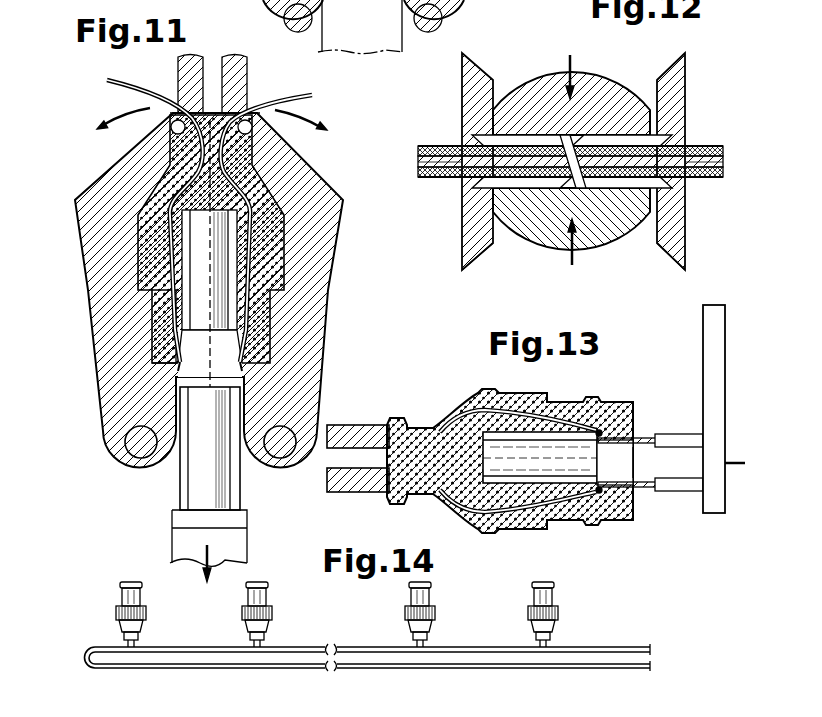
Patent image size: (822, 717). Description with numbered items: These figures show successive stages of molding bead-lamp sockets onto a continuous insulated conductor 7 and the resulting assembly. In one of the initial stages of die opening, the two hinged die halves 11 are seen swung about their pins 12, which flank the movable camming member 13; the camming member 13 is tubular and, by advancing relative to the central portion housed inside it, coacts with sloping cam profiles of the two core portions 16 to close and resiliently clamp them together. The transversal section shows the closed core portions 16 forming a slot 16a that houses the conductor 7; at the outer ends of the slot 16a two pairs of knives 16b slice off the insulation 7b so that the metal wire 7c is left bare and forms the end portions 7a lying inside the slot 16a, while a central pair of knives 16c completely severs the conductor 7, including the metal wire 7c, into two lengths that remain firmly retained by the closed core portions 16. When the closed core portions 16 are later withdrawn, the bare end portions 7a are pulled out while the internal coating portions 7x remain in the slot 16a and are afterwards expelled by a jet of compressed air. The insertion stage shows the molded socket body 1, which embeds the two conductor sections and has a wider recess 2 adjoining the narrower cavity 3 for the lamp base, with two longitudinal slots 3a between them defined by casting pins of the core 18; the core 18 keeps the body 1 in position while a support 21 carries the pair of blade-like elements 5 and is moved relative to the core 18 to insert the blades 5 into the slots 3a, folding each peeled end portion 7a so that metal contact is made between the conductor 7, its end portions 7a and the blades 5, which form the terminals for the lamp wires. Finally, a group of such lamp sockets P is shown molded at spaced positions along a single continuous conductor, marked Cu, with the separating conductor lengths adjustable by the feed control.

In FIG. 11, the lamp socket body 1 is at (280, 247).
In FIG. 13, the lamp socket body 1 is at (502, 390).
In FIG. 11, the recess 2 is at (185, 344).
In FIG. 13, the recess 2 is at (628, 466).
In FIG. 11, the cavity 3 is at (197, 238).
In FIG. 13, the cavity 3 is at (510, 470).
In FIG. 13, the longitudinal slots 3a is at (563, 490).
In FIG. 13, the blade-like elements 5 is at (640, 440).
In FIG. 11, the insulated conductor 7 is at (262, 135).
In FIG. 12, the insulated conductor 7 is at (430, 146).
In FIG. 13, the insulated conductor 7 is at (555, 420).
In FIG. 11, the end portions 7a is at (250, 351).
In FIG. 12, the end portions 7a is at (527, 146).
In FIG. 13, the end portions 7a is at (596, 438).
In FIG. 12, the insulation 7b is at (684, 146).
In FIG. 12, the metal wire 7c is at (420, 158).
In FIG. 12, the coating portions 7x is at (462, 232).
In FIG. 11, the hinged die halves 11 is at (107, 280).
In FIG. 11, the pins 12 is at (130, 437).
In FIG. 11, the movable camming member 13 is at (178, 543).
In FIG. 11, the core portions 16 is at (197, 480).
In FIG. 12, the core portions 16 is at (555, 85).
In FIG. 12, the slot 16a is at (530, 190).
In FIG. 12, the knives 16b is at (465, 105).
In FIG. 12, the central knives 16c is at (578, 195).
In FIG. 13, the core 18 is at (352, 428).
In FIG. 13, the support 21 is at (710, 384).
In FIG. 14, the copper pipe Cu is at (188, 646).
In FIG. 14, the assembly of lamp sockets P is at (272, 600).